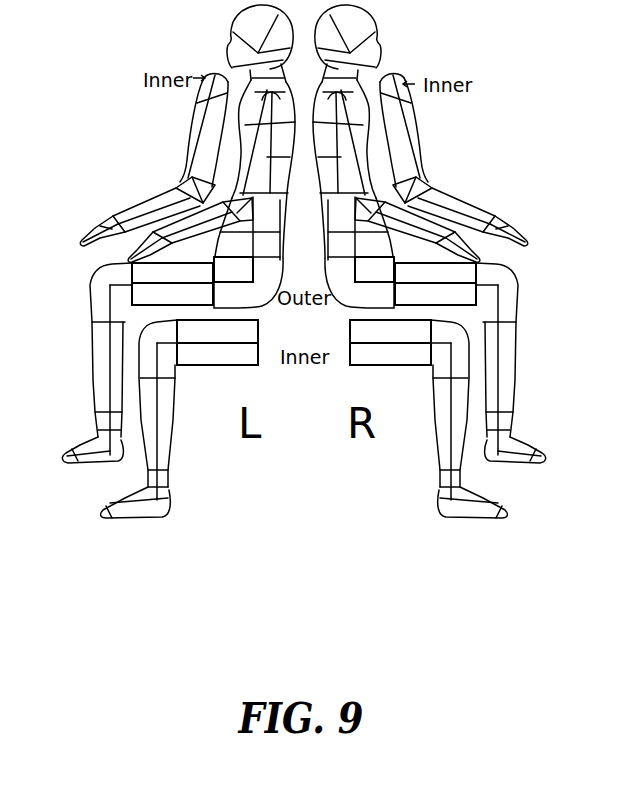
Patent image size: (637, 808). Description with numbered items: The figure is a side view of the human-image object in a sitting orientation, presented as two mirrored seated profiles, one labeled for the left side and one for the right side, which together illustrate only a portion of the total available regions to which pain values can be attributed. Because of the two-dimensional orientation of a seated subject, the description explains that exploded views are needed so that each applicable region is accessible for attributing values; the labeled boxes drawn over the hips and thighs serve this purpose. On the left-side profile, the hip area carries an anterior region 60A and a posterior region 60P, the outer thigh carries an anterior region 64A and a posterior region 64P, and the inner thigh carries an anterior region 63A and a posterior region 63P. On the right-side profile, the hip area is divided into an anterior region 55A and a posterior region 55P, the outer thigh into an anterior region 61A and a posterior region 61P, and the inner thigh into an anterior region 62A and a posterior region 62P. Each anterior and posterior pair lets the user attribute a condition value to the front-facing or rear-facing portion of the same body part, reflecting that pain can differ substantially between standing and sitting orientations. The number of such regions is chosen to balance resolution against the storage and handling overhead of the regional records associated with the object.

The left outer thigh anterior region 64A is at (172, 273).
The left outer thigh posterior region 64P is at (172, 294).
The left hip anterior region 60A is at (233, 269).
The left hip posterior region 60P is at (248, 283).
The left inner thigh anterior region 63A is at (217, 331).
The left inner thigh posterior region 63P is at (217, 354).
The right hip anterior region 55A is at (374, 269).
The right hip posterior region 55P is at (359, 283).
The right outer thigh anterior region 61A is at (435, 273).
The right outer thigh posterior region 61P is at (435, 294).
The right inner thigh anterior region 62A is at (390, 331).
The right inner thigh posterior region 62P is at (390, 354).